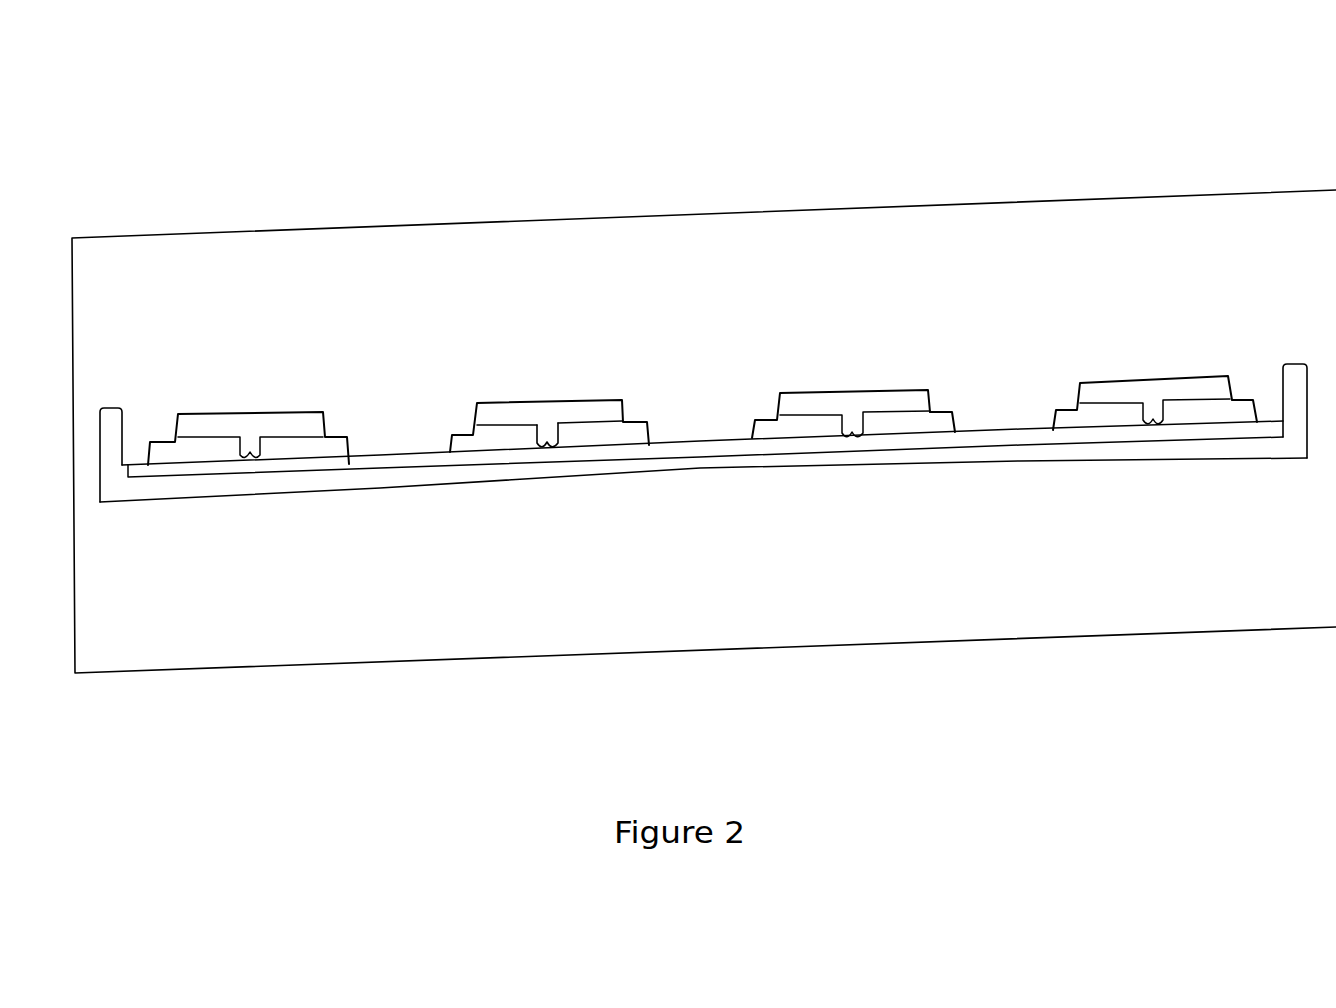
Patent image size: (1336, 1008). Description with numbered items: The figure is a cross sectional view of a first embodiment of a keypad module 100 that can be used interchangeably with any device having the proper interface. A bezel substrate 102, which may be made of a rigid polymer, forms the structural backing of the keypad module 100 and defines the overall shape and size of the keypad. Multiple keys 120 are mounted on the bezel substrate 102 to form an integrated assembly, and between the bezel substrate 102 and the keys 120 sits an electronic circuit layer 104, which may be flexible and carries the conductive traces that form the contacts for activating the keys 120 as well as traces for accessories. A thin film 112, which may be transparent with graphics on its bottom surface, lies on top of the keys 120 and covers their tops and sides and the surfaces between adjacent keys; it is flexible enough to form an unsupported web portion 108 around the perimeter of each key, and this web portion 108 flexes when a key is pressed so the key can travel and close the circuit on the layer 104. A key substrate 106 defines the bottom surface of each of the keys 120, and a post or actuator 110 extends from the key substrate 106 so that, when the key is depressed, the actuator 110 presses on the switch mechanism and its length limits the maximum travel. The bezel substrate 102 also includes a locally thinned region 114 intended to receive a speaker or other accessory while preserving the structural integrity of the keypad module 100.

The keypad module 100 is at (1135, 273).
The bezel substrate 102 is at (1182, 455).
The electronic circuit layer 104 is at (282, 473).
The key substrate 106 is at (190, 415).
The web portion 108 is at (955, 417).
The actuator 110 is at (540, 425).
The thin film 112 is at (495, 403).
The locally thinned region 114 is at (785, 448).
The keys 120 is at (852, 400).